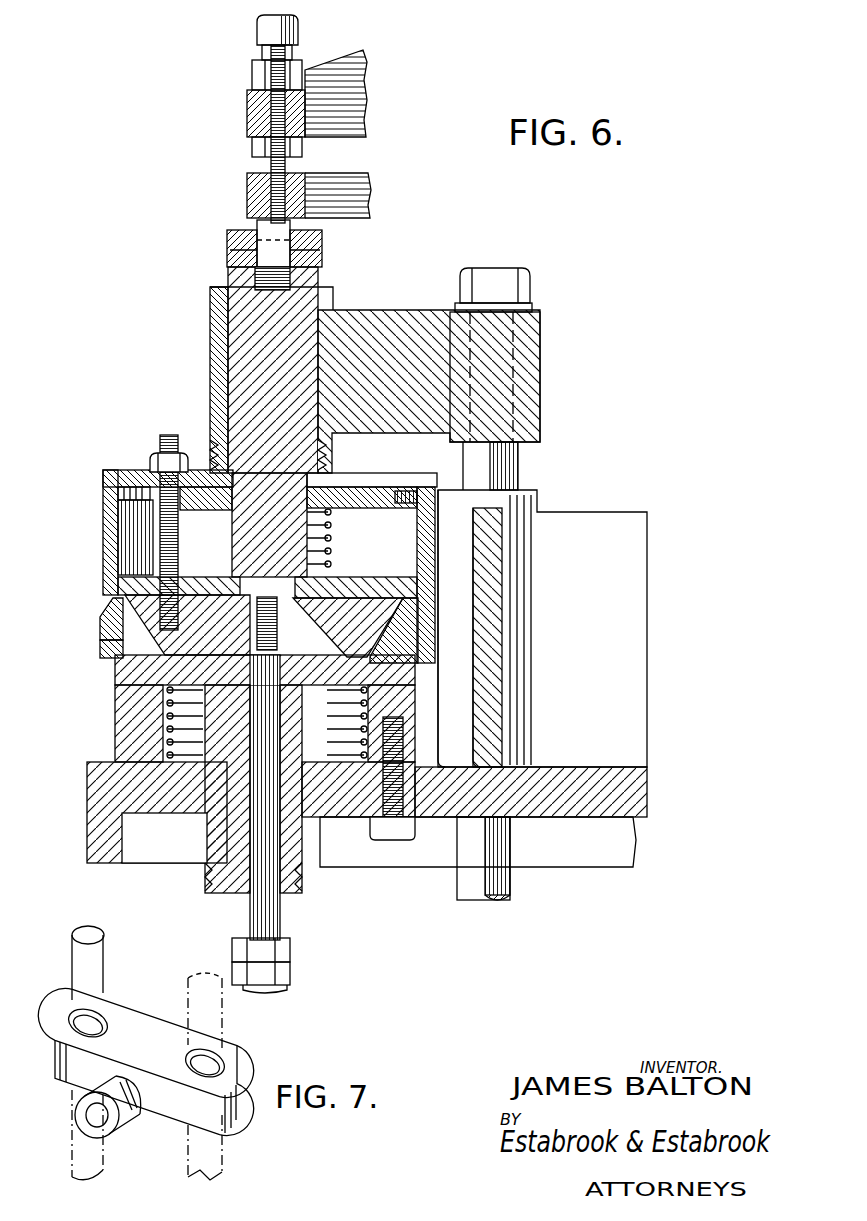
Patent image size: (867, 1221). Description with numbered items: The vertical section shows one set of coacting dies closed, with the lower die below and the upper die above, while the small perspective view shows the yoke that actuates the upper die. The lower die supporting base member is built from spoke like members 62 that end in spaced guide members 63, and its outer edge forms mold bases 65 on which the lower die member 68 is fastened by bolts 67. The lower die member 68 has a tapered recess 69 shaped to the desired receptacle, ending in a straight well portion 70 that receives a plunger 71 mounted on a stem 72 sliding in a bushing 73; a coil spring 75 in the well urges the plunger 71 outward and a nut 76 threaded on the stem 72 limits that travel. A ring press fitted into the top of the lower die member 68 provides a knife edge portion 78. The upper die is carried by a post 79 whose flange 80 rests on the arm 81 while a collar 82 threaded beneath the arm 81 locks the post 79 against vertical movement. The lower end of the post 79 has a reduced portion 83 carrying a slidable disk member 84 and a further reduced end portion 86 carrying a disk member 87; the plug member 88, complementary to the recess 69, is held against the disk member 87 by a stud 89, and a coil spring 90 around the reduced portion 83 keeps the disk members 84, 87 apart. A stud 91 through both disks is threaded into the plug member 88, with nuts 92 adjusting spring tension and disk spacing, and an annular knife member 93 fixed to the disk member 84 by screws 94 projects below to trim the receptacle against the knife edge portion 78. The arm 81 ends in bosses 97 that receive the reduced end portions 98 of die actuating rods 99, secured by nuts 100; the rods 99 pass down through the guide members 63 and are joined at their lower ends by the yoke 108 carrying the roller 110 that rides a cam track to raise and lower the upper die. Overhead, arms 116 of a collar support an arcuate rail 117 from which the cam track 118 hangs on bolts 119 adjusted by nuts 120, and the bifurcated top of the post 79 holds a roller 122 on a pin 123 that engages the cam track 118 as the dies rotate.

In FIG. 6, the spoke like member 62 is at (590, 770).
In FIG. 6, the guide member 63 is at (527, 640).
In FIG. 6, the mold base 65 is at (145, 820).
In FIG. 6, the bolt 67 is at (395, 840).
In FIG. 6, the lower die member 68 is at (120, 735).
In FIG. 6, the tapered recess 69 is at (100, 650).
In FIG. 6, the well portion 70 is at (145, 703).
In FIG. 6, the plunger 71 is at (165, 672).
In FIG. 6, the stem 72 is at (250, 908).
In FIG. 6, the bushing 73 is at (320, 745).
In FIG. 6, the coil spring 75 is at (85, 775).
In FIG. 6, the nut 76 is at (292, 948).
In FIG. 6, the knife edge portion 78 is at (110, 610).
In FIG. 6, the post 79 is at (232, 368).
In FIG. 6, the flange 80 is at (212, 298).
In FIG. 6, the arm 81 is at (372, 325).
In FIG. 6, the collar 82 is at (330, 455).
In FIG. 6, the reduced portion 83 is at (322, 555).
In FIG. 6, the disk member 84 is at (380, 500).
In FIG. 6, the reduced end portion 86 is at (290, 615).
In FIG. 6, the disk member 87 is at (405, 590).
In FIG. 6, the plug member 88 is at (190, 600).
In FIG. 6, the stud 89 is at (285, 632).
In FIG. 6, the coil spring 90 is at (322, 530).
In FIG. 6, the stud 91 is at (150, 515).
In FIG. 6, the nut 92 is at (160, 455).
In FIG. 6, the knife member 93 is at (105, 565).
In FIG. 6, the screw 94 is at (103, 490).
In FIG. 6, the boss 97 is at (100, 630).
In FIG. 6, the reduced end portion 98 is at (527, 330).
In FIG. 6, the die actuating rod 99 is at (515, 462).
In FIG. 7, the die actuating rod 99 is at (147, 1053).
In FIG. 6, the nut 100 is at (528, 292).
In FIG. 7, the yoke 108 is at (140, 1045).
In FIG. 7, the roller 110 is at (118, 1125).
In FIG. 6, the arm 116 is at (337, 60).
In FIG. 6, the rail 117 is at (247, 105).
In FIG. 6, the cam track 118 is at (247, 185).
In FIG. 6, the bolt 119 is at (262, 165).
In FIG. 6, the nut 120 is at (252, 72).
In FIG. 6, the roller 122 is at (262, 230).
In FIG. 6, the pin 123 is at (235, 250).